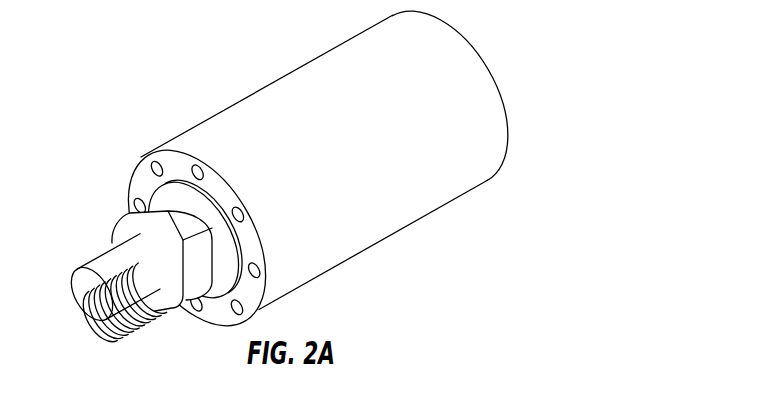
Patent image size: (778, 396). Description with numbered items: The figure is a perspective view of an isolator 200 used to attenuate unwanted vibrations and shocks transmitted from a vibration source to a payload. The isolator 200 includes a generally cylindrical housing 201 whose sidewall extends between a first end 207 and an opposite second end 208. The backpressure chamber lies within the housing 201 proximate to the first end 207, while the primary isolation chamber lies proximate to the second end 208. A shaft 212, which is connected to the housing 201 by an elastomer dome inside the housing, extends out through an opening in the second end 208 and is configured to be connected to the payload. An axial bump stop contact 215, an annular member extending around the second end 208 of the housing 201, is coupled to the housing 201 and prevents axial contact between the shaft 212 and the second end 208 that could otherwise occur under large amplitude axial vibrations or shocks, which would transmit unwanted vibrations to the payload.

The isolator 200 is at (184, 68).
The housing 201 is at (290, 95).
The first end 207 is at (481, 57).
The second end 208 is at (142, 172).
The shaft 212 is at (108, 258).
The axial bump stop contact 215 is at (223, 272).